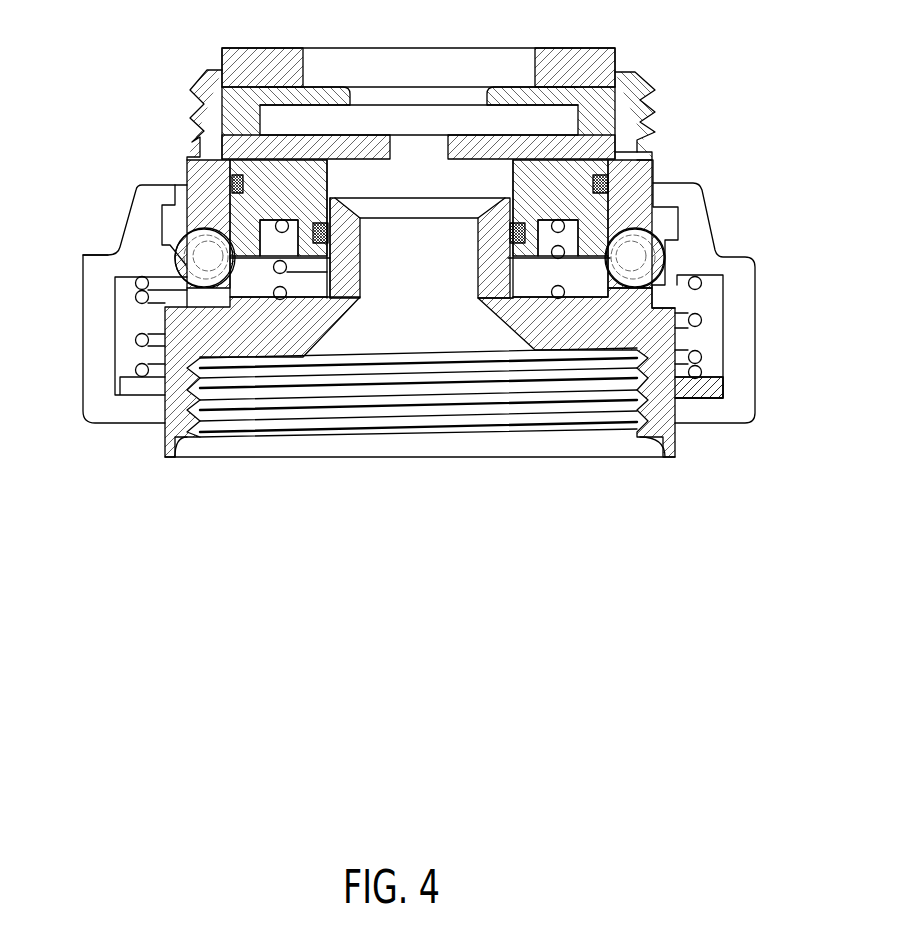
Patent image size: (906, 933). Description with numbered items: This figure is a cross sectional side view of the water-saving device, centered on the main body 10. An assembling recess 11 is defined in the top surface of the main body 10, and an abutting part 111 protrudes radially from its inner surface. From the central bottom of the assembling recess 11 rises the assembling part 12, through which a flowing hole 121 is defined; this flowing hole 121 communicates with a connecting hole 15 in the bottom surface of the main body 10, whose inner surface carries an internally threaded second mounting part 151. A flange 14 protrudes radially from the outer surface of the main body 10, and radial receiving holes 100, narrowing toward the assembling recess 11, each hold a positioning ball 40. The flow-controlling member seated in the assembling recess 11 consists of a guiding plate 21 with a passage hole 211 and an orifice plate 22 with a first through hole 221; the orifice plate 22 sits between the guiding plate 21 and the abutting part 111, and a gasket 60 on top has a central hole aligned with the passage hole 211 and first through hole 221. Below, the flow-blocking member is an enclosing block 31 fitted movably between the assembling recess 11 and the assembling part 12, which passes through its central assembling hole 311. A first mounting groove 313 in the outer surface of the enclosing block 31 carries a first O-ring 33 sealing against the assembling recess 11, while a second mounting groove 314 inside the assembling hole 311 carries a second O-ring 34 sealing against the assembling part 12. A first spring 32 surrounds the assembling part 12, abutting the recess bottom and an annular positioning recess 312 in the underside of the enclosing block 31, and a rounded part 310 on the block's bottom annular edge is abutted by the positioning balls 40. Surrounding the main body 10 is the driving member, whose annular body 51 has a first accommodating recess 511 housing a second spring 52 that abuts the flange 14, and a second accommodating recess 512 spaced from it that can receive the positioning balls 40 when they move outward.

The receiving hole 100 is at (85, 256).
The main body 10 is at (289, 348).
The assembling recess 11 is at (270, 297).
The assembling part 12 is at (348, 273).
The flowing hole 121 is at (477, 257).
The flange 14 is at (710, 386).
The connecting hole 15 is at (555, 457).
The second mounting part 151 is at (660, 450).
The guiding plate 21 is at (333, 97).
The passage hole 211 is at (490, 97).
The orifice plate 22 is at (565, 143).
The first through hole 221 is at (392, 148).
The enclosing block 31 is at (246, 167).
The assembling hole 311 is at (330, 176).
The positioning recess 312 is at (258, 215).
The first mounting groove 313 is at (282, 222).
The second mounting groove 314 is at (330, 232).
The first spring 32 is at (280, 267).
The first O-ring 33 is at (607, 185).
The second O-ring 34 is at (525, 238).
The positioning ball 40 is at (202, 248).
The annular body 51 is at (105, 406).
The first accommodating recess 511 is at (717, 322).
The second accommodating recess 512 is at (673, 220).
The second spring 52 is at (140, 338).
The rounded part 310 is at (642, 287).
The gasket 60 is at (575, 55).
The abutting part 111 is at (618, 153).